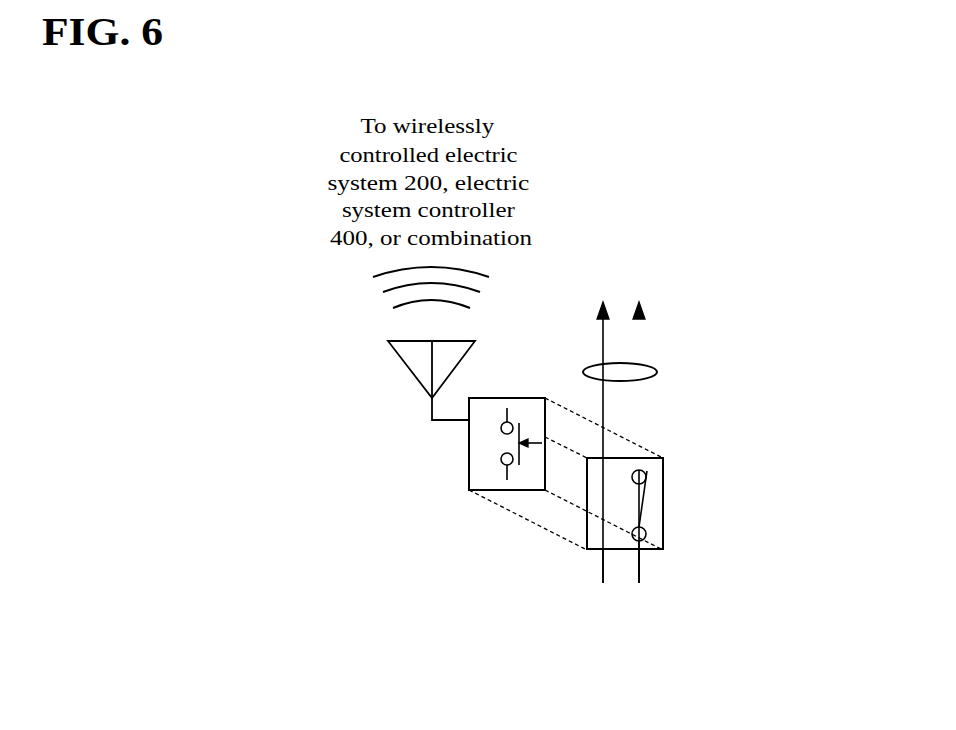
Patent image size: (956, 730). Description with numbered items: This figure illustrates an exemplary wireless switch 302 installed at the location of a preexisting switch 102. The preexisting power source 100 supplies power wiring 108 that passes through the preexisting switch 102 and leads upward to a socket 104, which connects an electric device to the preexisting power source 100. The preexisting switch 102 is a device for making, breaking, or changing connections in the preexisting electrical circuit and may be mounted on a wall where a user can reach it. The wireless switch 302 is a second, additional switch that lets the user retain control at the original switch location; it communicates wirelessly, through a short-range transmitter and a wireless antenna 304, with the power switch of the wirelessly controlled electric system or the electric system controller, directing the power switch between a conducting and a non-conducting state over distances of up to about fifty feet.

The wireless antenna 304 is at (375, 345).
The wireless switch 302 is at (455, 453).
The socket 104 is at (621, 412).
The power wiring 108 is at (705, 362).
The preexisting switch 102 is at (705, 483).
The preexisting power source 100 is at (705, 607).